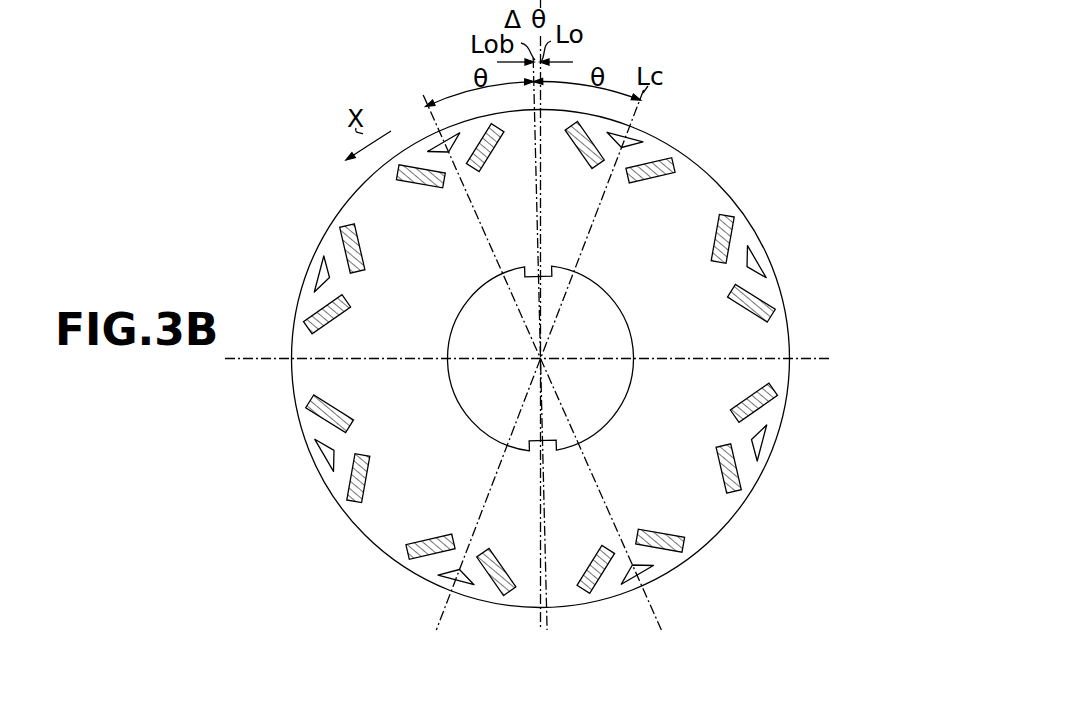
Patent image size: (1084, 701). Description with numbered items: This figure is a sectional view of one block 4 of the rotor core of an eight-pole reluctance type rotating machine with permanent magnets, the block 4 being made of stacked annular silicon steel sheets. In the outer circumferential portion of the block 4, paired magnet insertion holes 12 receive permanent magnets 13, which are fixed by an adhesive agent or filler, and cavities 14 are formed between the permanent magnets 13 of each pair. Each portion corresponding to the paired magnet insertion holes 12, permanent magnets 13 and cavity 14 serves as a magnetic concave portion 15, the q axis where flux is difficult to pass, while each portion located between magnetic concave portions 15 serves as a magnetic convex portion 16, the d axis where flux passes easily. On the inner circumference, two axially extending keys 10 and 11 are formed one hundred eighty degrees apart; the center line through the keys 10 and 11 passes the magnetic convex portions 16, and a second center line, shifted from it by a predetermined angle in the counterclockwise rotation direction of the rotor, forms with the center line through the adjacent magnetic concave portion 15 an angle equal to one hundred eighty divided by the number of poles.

The block 4 is at (710, 521).
The key 10 is at (551, 282).
The key 11 is at (551, 432).
The magnet insertion hole 12 is at (592, 167).
The permanent magnet 13 is at (572, 138).
The cavity 14 is at (640, 137).
The magnetic concave portion 15 is at (415, 158).
The magnetic convex portion 16 is at (517, 130).